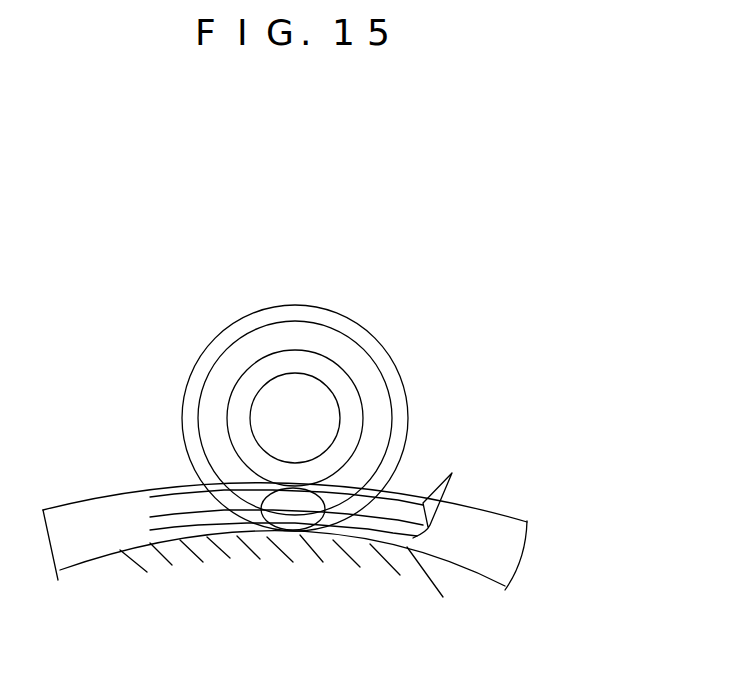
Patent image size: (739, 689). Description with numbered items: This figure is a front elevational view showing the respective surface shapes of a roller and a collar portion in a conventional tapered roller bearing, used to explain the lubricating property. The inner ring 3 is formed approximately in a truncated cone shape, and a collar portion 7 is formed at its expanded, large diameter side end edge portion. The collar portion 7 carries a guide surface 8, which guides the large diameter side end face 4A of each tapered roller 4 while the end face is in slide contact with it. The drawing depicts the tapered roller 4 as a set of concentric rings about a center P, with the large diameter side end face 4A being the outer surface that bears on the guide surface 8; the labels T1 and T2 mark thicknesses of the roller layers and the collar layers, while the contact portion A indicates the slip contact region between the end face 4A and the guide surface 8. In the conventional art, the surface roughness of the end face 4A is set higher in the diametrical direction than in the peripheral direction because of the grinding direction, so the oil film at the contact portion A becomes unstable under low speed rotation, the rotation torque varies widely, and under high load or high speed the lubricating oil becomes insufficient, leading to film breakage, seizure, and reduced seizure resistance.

The inner ring 3 is at (493, 505).
The collar portion 7 is at (125, 493).
The guide surface 8 is at (102, 513).
The tapered roller 4 is at (306, 393).
The large diameter side end face 4A is at (215, 348).
The center of transfer roller P is at (305, 392).
The thickness of roller layer T2 is at (358, 388).
The thickness of belt layer T1 is at (452, 498).
The contact portion A is at (323, 488).